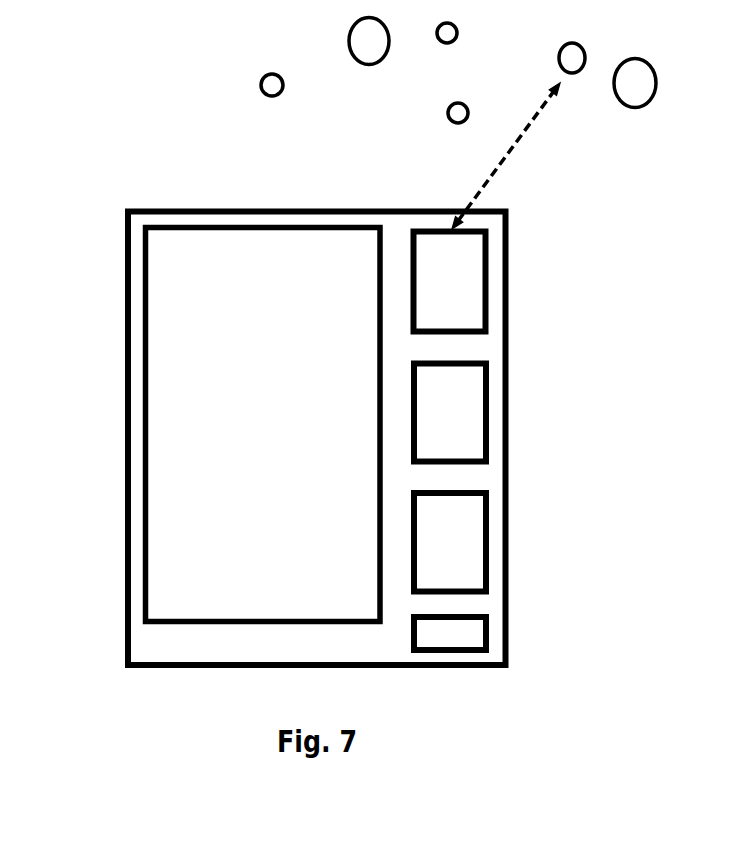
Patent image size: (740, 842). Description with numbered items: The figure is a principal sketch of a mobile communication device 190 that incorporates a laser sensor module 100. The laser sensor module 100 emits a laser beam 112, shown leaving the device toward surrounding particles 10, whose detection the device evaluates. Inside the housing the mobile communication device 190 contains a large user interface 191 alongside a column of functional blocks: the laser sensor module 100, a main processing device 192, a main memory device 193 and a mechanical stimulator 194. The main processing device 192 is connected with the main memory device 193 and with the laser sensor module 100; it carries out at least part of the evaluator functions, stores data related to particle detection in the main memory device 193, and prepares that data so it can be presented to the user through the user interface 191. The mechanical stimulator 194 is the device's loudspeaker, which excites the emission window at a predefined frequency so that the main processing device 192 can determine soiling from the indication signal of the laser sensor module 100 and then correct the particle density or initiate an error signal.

The particles 10 is at (283, 86).
The laser sensor module 100 is at (488, 261).
The laser beam 112 is at (512, 150).
The mobile communication device 190 is at (143, 208).
The user interface 191 is at (143, 478).
The main processing device 192 is at (488, 425).
The main memory device 193 is at (488, 550).
The mechanical stimulator 194 is at (488, 633).